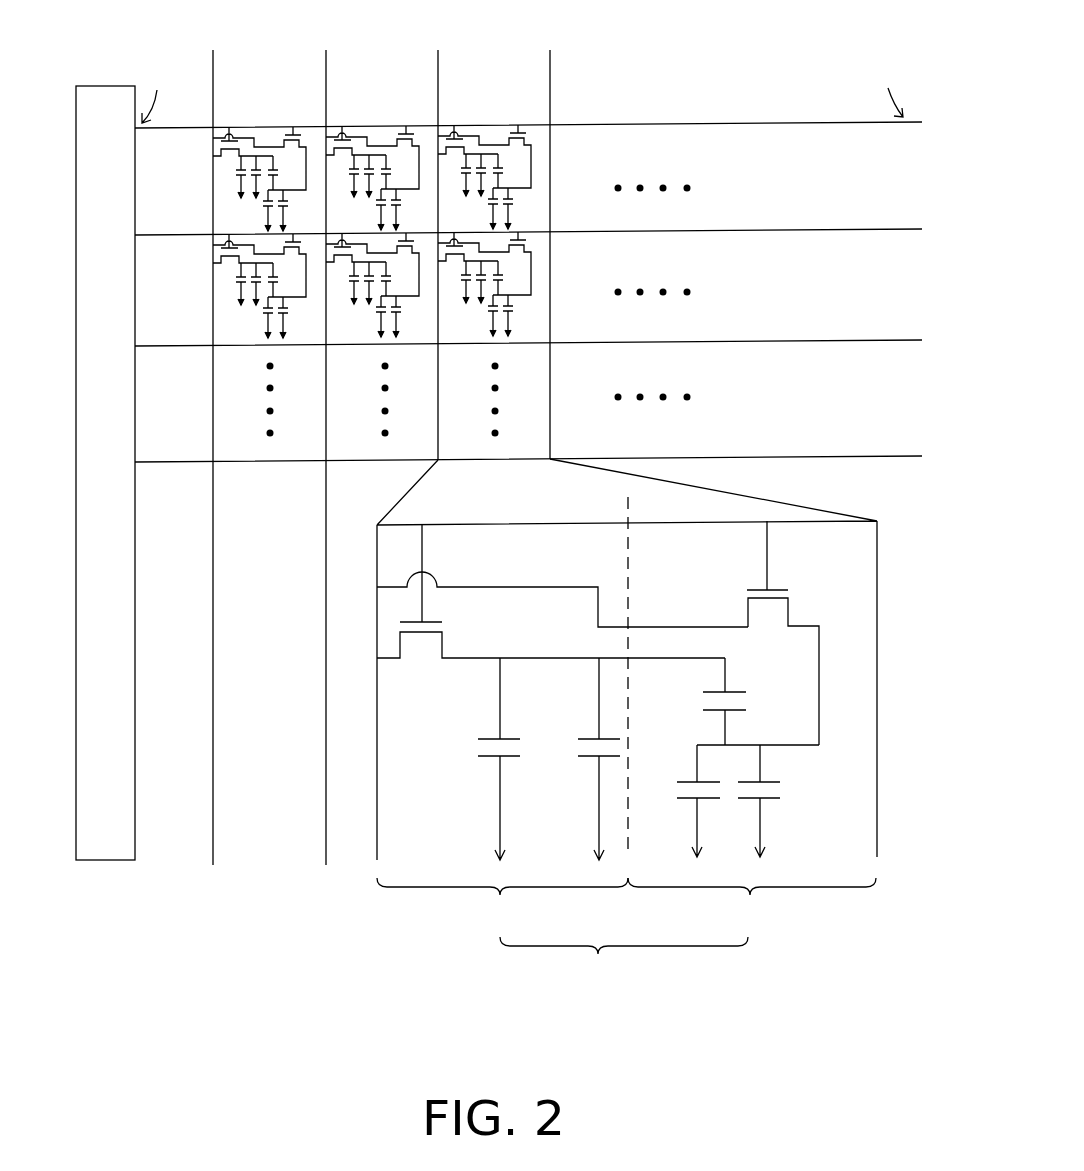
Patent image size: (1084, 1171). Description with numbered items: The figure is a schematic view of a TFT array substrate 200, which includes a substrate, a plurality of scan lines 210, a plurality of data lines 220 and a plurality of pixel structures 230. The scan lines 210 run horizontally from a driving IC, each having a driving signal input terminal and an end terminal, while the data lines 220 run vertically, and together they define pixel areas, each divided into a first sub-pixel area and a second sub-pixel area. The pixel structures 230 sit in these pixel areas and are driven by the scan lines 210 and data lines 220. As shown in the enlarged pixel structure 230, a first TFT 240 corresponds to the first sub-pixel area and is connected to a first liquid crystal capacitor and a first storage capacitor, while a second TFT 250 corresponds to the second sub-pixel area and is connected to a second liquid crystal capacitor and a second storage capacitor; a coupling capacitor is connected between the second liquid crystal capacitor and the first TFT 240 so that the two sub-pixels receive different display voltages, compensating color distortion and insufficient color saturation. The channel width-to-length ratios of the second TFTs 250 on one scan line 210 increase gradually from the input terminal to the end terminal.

The TFT array substrate 200 is at (503, 435).
The scan lines 210 is at (797, 122).
The data lines 220 is at (214, 70).
The pixel structures 230 is at (627, 721).
The first TFT 240 is at (443, 645).
The second TFT 250 is at (746, 612).